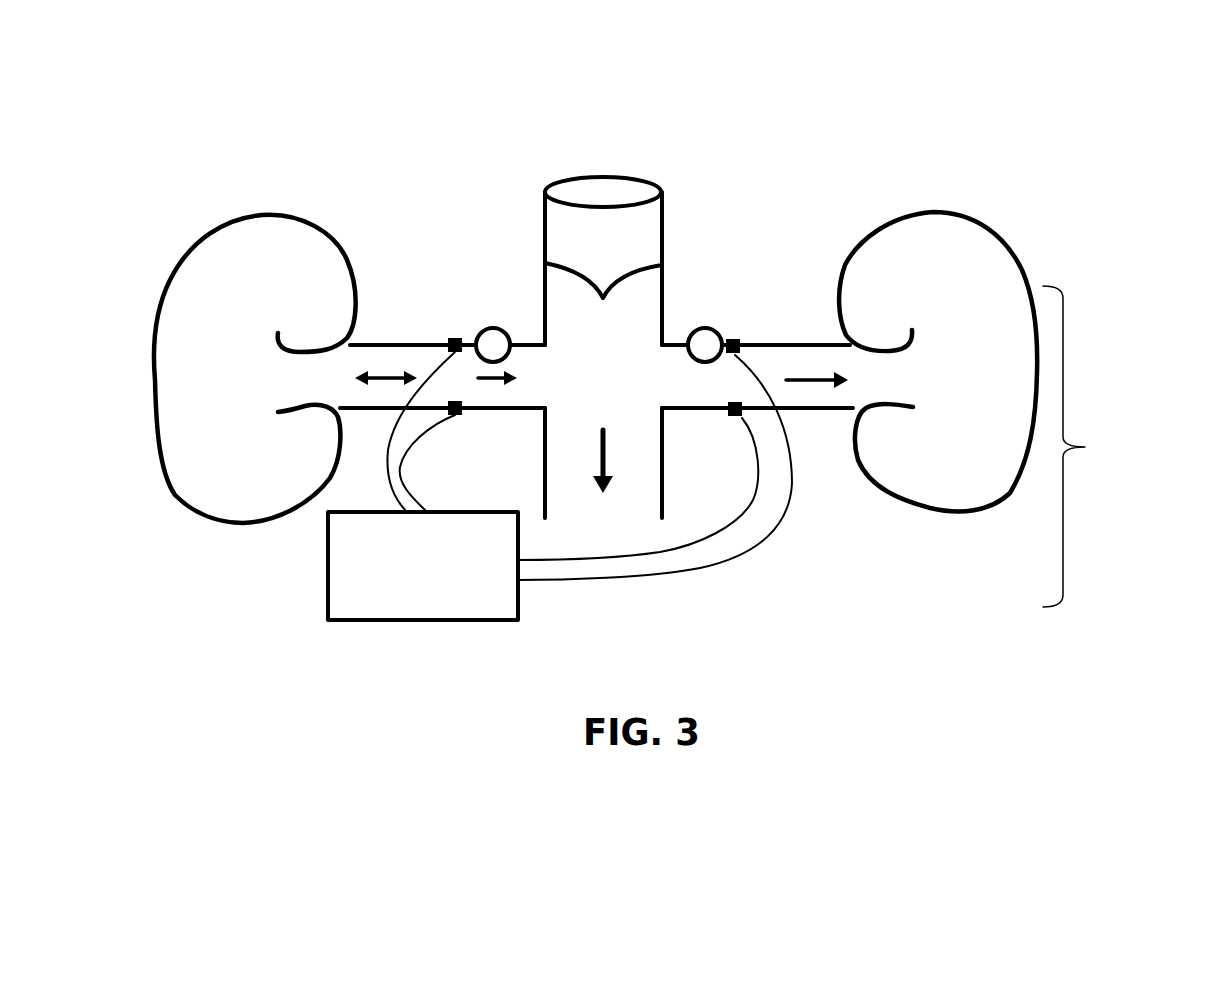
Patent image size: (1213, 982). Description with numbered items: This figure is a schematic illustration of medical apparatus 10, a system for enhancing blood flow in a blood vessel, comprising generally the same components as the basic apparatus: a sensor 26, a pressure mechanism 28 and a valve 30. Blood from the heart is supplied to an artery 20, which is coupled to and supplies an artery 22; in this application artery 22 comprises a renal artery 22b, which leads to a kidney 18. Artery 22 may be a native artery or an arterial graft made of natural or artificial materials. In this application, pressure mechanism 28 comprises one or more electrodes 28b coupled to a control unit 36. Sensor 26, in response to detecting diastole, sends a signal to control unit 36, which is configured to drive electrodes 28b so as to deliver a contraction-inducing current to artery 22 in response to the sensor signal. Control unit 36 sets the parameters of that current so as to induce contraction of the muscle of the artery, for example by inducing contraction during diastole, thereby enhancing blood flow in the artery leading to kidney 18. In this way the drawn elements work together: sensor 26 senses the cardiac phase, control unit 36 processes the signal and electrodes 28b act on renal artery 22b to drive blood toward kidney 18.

The medical apparatus 10 is at (1080, 413).
The kidney 18 is at (172, 490).
The artery 20 is at (662, 225).
The artery 22 is at (596, 326).
The renal artery 22b is at (427, 345).
The sensor 26 is at (483, 328).
The pressure mechanism 28 is at (646, 504).
The electrodes 28b is at (398, 467).
The valve 30 is at (545, 263).
The control unit 36 is at (328, 612).